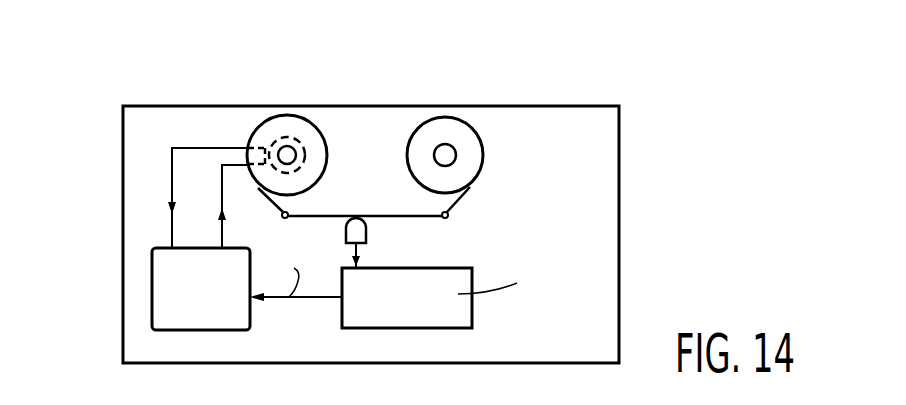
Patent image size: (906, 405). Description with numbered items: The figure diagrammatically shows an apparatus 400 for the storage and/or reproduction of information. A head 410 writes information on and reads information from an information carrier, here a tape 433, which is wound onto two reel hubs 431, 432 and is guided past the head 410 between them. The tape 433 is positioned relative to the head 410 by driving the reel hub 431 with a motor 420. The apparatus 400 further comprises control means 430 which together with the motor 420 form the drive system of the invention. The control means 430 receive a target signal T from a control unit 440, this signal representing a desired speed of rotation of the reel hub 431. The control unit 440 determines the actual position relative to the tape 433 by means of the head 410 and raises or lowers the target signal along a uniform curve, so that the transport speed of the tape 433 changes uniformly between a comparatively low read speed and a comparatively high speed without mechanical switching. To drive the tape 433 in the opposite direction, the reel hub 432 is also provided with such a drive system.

The apparatus 400 is at (138, 92).
The head 410 is at (366, 232).
The motor 420 is at (285, 137).
The control means 430 is at (222, 330).
The reel hub 431 is at (297, 150).
The reel hub 432 is at (454, 150).
The tape 433 is at (460, 207).
The control unit 440 is at (420, 328).